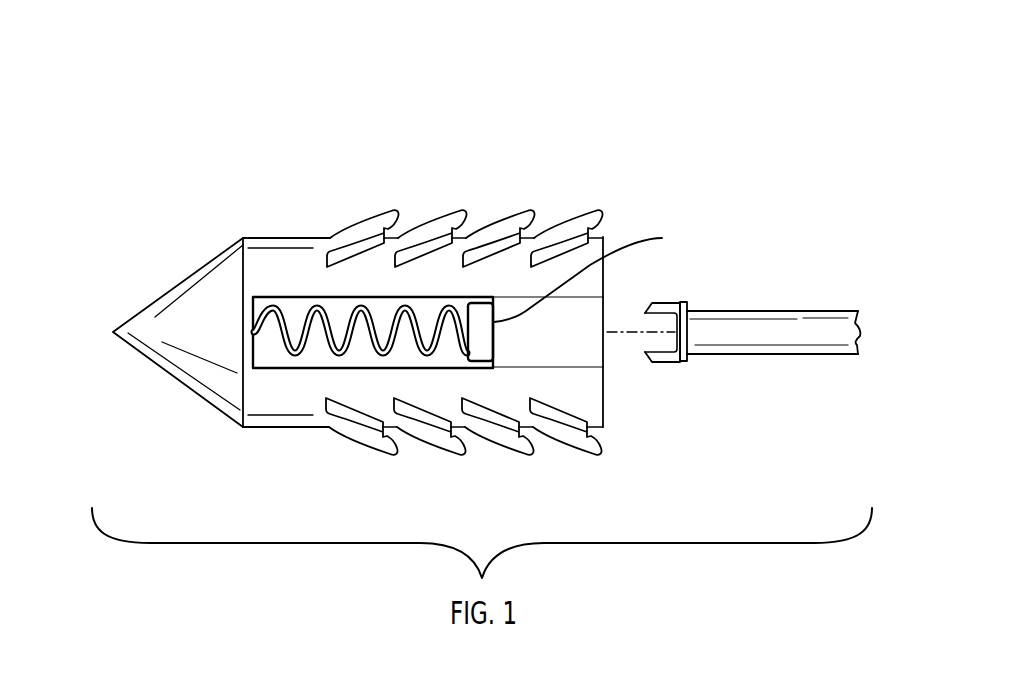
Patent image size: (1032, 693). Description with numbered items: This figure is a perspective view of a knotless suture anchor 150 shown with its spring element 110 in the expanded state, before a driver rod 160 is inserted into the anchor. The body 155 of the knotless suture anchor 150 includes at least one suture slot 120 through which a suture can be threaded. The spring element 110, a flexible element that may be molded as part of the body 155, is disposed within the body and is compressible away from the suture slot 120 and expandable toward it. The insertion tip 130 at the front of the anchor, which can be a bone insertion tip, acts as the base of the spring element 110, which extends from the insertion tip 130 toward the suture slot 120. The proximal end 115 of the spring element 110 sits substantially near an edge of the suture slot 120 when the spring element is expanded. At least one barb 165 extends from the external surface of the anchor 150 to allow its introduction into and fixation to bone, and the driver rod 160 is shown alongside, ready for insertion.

The knotless suture anchor 150 is at (749, 90).
The body 155 is at (276, 262).
The insertion tip 130 is at (113, 330).
The barb 165 is at (523, 210).
The spring element 110 is at (298, 327).
The proximal end 115 is at (480, 340).
The suture slot 120 is at (592, 271).
The driver rod 160 is at (770, 312).